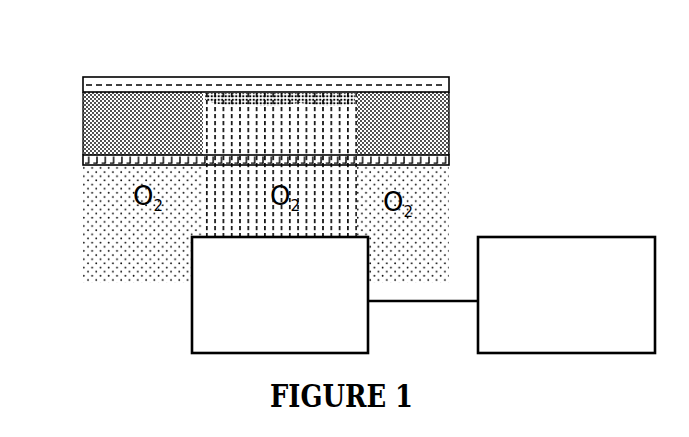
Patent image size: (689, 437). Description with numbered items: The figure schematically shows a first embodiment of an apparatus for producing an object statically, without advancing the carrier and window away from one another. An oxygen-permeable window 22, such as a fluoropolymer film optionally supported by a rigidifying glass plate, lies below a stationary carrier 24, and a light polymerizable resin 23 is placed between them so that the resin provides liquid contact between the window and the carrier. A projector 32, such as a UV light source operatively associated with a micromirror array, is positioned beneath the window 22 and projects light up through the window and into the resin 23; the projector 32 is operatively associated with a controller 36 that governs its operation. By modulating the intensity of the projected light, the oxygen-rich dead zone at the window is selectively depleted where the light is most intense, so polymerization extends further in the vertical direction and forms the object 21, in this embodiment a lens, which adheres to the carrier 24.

The object 21 is at (222, 98).
The oxygen-permeable window 22 is at (103, 162).
The light polymerizable resin 23 is at (266, 123).
The stationary carrier 24 is at (108, 77).
The projector 32 is at (280, 295).
The controller 36 is at (566, 295).